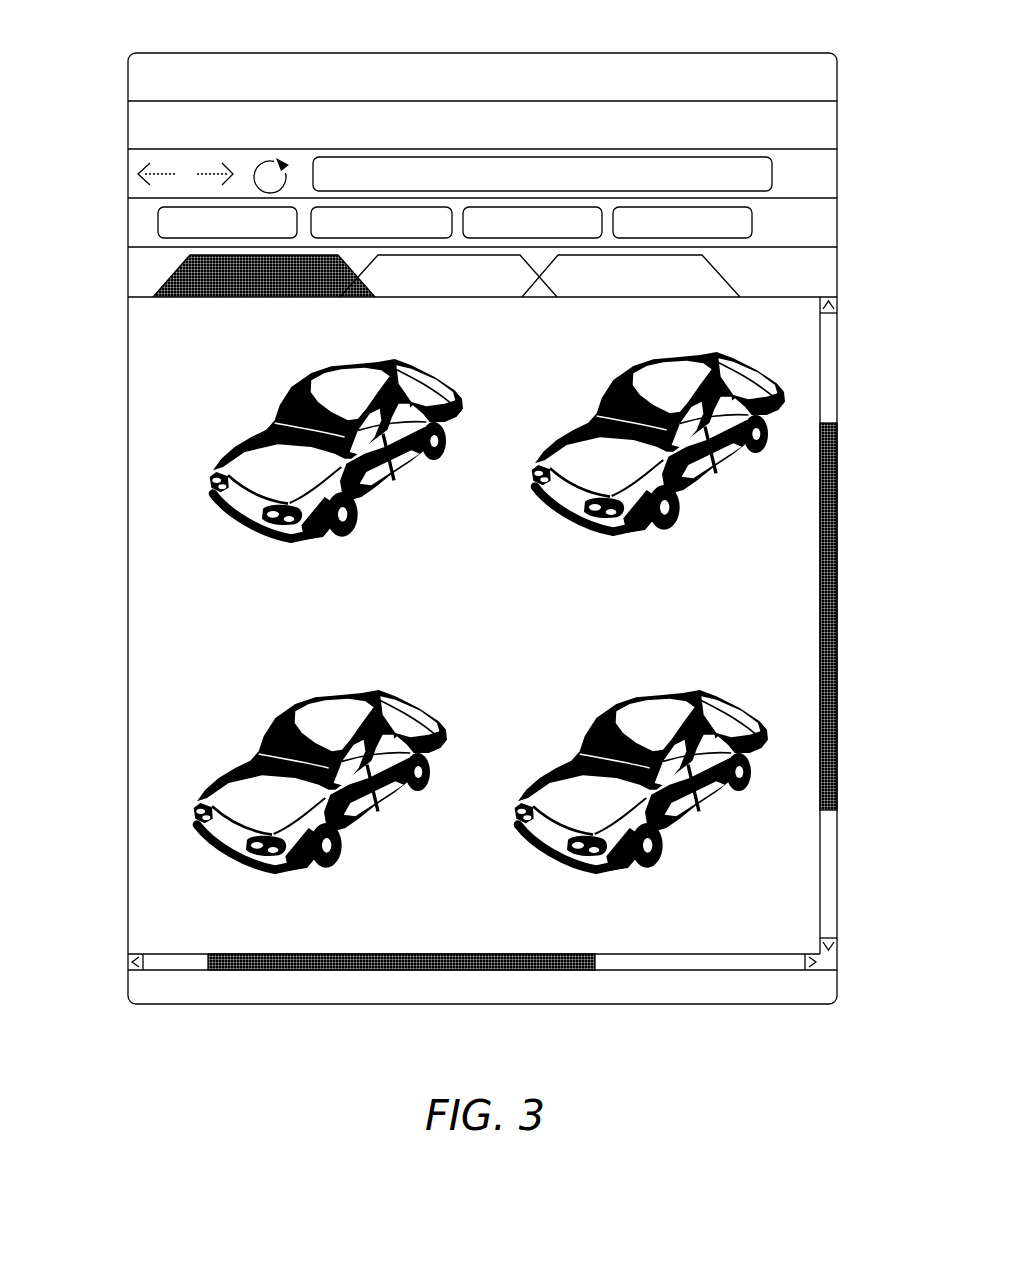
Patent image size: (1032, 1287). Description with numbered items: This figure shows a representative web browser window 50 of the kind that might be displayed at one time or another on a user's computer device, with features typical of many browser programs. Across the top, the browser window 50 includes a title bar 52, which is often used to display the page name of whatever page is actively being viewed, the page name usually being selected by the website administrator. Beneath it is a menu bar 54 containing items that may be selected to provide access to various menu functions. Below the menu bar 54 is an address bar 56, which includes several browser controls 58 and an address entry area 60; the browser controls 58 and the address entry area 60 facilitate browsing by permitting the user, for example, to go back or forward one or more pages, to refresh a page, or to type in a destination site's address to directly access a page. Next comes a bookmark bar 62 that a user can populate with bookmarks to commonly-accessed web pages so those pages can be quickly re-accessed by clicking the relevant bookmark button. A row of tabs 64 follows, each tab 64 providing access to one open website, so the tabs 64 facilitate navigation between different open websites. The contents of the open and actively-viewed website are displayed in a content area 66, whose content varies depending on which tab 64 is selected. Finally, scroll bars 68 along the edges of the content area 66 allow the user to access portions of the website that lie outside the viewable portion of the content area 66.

The browser window 50 is at (264, 1026).
The title bar 52 is at (128, 82).
The menu bar 54 is at (128, 126).
The address bar 56 is at (128, 174).
The browser controls 58 is at (288, 183).
The address entry area 60 is at (772, 177).
The bookmark bar 62 is at (128, 222).
The tabs 64 is at (178, 267).
The content area 66 is at (128, 577).
The scroll bars 68 is at (837, 651).